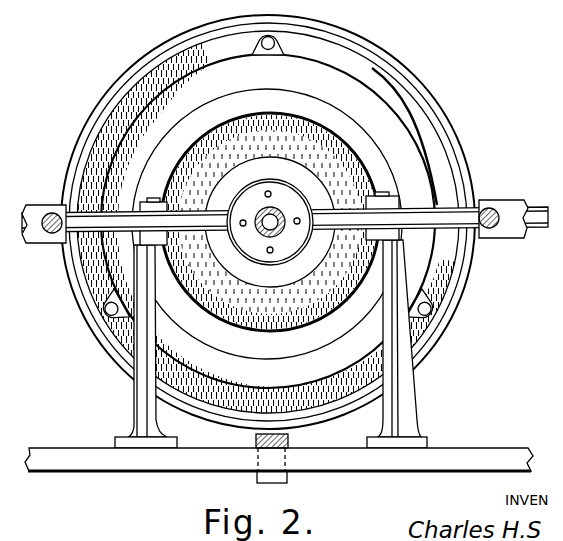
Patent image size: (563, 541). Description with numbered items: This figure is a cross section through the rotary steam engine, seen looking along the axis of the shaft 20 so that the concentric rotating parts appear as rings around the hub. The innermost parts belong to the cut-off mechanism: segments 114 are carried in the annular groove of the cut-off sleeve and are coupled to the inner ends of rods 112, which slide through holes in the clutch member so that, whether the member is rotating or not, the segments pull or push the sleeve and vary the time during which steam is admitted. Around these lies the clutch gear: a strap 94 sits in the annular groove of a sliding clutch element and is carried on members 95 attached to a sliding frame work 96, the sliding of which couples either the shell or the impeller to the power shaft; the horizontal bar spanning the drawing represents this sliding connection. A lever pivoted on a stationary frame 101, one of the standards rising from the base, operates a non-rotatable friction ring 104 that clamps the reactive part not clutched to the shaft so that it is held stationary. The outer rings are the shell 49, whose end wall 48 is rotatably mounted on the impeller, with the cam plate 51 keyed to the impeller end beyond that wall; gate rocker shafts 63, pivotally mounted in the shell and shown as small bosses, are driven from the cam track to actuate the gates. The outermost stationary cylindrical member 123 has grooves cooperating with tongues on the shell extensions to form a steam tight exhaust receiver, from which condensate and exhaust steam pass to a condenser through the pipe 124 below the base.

The stationary cylindrical member 123 is at (160, 48).
The gate rocker shaft 63 is at (278, 38).
The shell 49 is at (332, 48).
The cam plate 51 is at (268, 221).
The end wall 48 is at (450, 260).
The friction ring 104 is at (267, 224).
The shaft 20 is at (270, 222).
The rod 112 is at (268, 191).
The strap 94 is at (308, 193).
The segment 114 is at (260, 232).
The member 95 is at (100, 217).
The sliding frame work 96 is at (500, 214).
The stationary frame 101 is at (133, 402).
The pipe 124 is at (258, 474).